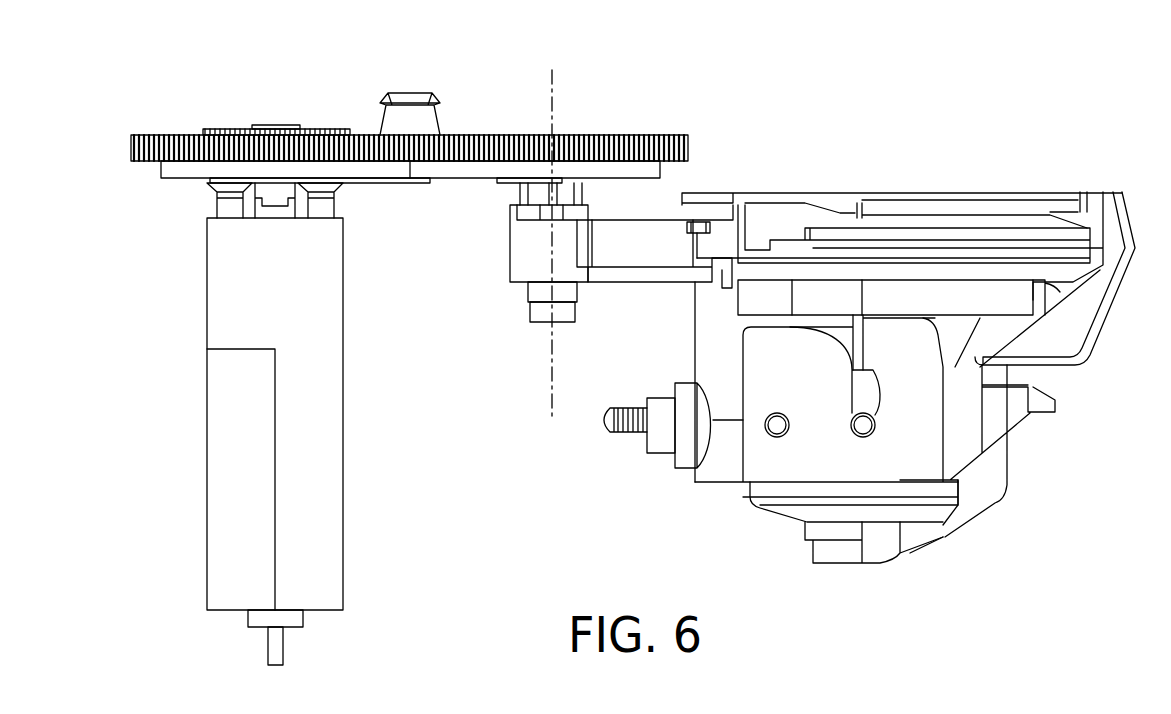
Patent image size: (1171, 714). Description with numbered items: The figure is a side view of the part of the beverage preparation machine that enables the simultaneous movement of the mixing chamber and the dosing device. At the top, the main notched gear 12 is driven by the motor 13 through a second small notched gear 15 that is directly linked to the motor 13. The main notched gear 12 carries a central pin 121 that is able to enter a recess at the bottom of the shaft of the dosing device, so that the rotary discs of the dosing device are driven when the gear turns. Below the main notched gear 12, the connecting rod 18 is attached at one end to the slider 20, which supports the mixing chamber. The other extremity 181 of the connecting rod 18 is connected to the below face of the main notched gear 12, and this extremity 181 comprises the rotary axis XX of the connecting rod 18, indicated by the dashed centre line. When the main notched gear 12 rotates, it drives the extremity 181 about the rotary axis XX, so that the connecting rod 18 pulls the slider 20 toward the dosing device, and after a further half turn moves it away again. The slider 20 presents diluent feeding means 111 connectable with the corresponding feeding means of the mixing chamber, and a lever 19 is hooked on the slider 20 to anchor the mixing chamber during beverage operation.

The main notched gear 12 is at (563, 147).
The second small notched gear 15 is at (320, 130).
The central pin 121 is at (420, 118).
The motor 13 is at (315, 457).
The connecting rod 18 is at (642, 270).
The extremity of the connecting rod 181 is at (528, 243).
The slider 20 is at (705, 345).
The diluent feeding means 111 is at (620, 428).
The lever 19 is at (985, 427).
The rotary axis XX is at (552, 402).